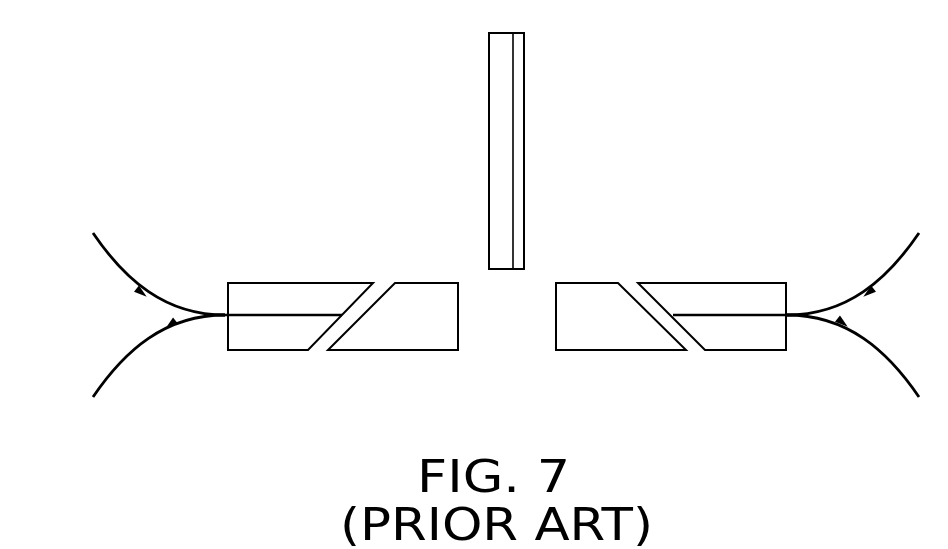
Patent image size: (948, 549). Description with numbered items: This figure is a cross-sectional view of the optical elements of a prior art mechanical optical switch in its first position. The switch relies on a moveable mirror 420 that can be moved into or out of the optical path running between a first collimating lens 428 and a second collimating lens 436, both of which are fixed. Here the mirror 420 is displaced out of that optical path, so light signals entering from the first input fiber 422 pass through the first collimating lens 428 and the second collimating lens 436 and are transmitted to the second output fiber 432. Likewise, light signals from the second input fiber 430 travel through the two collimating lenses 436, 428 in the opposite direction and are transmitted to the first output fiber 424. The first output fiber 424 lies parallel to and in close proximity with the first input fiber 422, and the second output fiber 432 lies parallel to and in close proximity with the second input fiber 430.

The mirror 420 is at (487, 137).
The first input fiber 422 is at (120, 267).
The first output fiber 424 is at (118, 363).
The first collimating lens 428 is at (413, 351).
The second input fiber 430 is at (898, 262).
The second output fiber 432 is at (880, 350).
The second collimating lens 436 is at (627, 351).